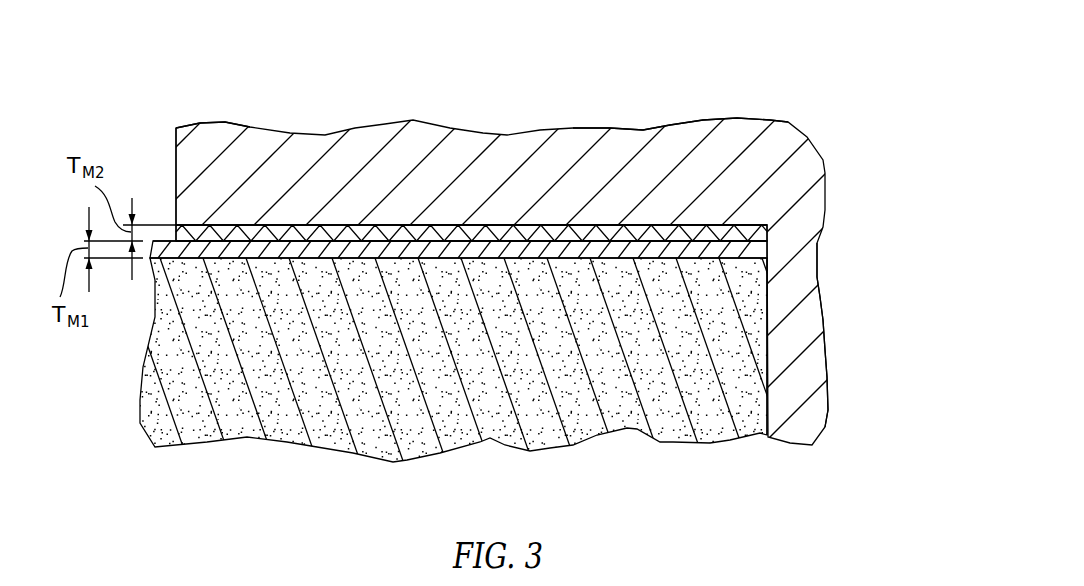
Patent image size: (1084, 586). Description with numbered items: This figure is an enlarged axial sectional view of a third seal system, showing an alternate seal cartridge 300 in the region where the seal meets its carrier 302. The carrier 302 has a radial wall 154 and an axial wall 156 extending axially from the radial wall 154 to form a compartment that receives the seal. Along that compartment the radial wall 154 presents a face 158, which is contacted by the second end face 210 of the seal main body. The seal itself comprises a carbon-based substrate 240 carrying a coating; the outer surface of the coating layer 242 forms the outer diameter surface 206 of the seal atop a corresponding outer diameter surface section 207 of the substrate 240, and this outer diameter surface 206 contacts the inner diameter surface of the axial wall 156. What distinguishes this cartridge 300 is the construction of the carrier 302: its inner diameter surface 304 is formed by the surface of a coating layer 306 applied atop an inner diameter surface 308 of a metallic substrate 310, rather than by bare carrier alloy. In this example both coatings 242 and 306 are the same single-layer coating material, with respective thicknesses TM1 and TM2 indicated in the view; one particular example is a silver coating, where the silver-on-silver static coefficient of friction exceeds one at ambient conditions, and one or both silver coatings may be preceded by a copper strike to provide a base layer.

The radial wall 154 is at (796, 294).
The axial wall 156 is at (630, 145).
The face 158 is at (767, 367).
The outer diameter surface 206 is at (344, 230).
The outer diameter surface section of the substrate 207 is at (271, 232).
The second end face 210 is at (768, 332).
The carbon-based substrate 240 is at (563, 403).
The coating layer 242 is at (429, 232).
The seal cartridge 300 is at (150, 182).
The carrier 302 is at (213, 112).
The inner diameter surface 304 is at (296, 246).
The coating layer 306 is at (498, 230).
The inner diameter surface of the metallic substrate 308 is at (224, 236).
The metallic substrate 310 is at (730, 137).